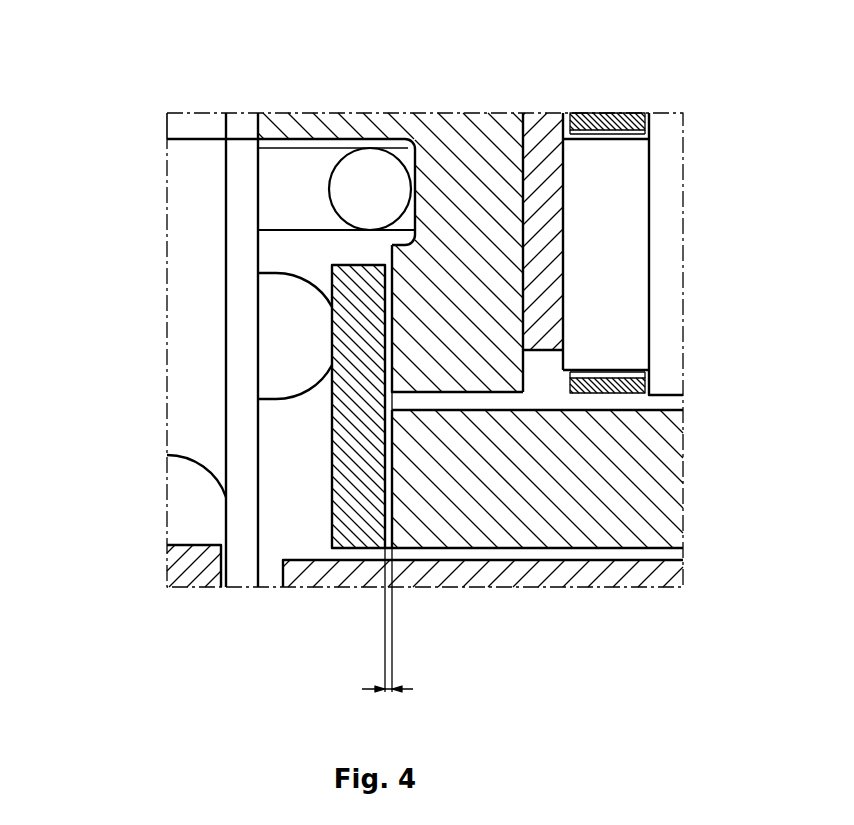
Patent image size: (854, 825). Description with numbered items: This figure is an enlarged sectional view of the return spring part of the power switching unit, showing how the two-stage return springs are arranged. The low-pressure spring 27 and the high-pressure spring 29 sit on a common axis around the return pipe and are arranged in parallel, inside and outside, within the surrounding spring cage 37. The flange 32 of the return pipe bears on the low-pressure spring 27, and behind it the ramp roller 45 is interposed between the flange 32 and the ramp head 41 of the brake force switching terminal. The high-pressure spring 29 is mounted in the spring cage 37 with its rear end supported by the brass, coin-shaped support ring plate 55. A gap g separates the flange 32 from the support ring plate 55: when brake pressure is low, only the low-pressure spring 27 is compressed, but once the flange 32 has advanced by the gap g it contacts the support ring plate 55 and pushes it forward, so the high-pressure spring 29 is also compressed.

The low-pressure spring 27 is at (290, 182).
The high-pressure spring 29 is at (282, 372).
The flange 32 is at (458, 198).
The spring cage 37 is at (190, 397).
The ramp head 41 is at (663, 277).
The ramp roller 45 is at (607, 145).
The support ring plate 55 is at (345, 525).
The gap g is at (387, 558).